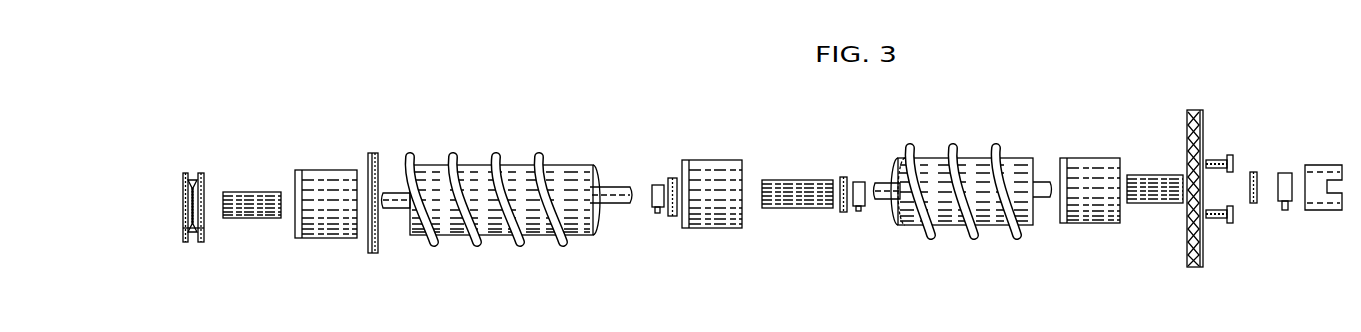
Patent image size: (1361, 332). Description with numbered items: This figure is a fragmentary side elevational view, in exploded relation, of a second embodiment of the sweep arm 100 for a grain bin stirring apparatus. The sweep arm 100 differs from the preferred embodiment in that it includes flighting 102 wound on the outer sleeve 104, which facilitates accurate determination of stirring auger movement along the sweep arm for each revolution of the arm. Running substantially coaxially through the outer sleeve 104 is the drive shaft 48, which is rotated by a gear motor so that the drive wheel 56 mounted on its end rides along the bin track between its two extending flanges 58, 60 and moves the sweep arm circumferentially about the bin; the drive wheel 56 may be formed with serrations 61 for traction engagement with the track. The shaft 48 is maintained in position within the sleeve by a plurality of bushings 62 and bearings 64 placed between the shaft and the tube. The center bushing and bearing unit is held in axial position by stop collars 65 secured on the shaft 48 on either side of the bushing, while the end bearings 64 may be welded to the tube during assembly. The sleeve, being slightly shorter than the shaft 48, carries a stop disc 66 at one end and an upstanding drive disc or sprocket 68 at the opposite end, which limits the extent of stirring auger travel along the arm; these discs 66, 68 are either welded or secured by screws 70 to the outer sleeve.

The drive shaft 48 is at (623, 204).
The drive wheel 56 is at (193, 182).
The flange 58 is at (183, 178).
The flange 60 is at (204, 177).
The serrations 61 is at (183, 228).
The bushing 62 is at (248, 218).
The bearing 64 is at (311, 180).
The stop collar 65 is at (657, 185).
The stop disc 66 is at (374, 160).
The drive disc or sprocket 68 is at (1202, 122).
The screw 70 is at (1232, 157).
The sweep arm 100 is at (717, 164).
The flighting 102 is at (458, 158).
The outer sleeve 104 is at (570, 172).